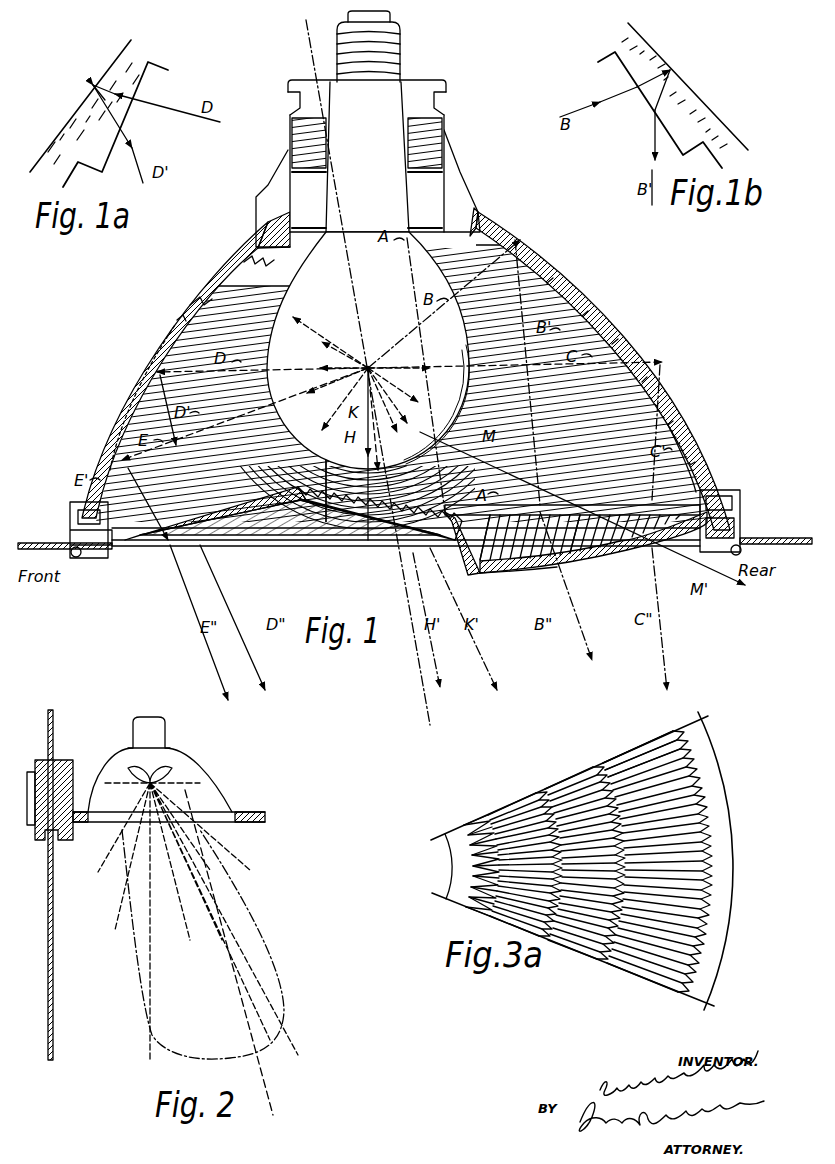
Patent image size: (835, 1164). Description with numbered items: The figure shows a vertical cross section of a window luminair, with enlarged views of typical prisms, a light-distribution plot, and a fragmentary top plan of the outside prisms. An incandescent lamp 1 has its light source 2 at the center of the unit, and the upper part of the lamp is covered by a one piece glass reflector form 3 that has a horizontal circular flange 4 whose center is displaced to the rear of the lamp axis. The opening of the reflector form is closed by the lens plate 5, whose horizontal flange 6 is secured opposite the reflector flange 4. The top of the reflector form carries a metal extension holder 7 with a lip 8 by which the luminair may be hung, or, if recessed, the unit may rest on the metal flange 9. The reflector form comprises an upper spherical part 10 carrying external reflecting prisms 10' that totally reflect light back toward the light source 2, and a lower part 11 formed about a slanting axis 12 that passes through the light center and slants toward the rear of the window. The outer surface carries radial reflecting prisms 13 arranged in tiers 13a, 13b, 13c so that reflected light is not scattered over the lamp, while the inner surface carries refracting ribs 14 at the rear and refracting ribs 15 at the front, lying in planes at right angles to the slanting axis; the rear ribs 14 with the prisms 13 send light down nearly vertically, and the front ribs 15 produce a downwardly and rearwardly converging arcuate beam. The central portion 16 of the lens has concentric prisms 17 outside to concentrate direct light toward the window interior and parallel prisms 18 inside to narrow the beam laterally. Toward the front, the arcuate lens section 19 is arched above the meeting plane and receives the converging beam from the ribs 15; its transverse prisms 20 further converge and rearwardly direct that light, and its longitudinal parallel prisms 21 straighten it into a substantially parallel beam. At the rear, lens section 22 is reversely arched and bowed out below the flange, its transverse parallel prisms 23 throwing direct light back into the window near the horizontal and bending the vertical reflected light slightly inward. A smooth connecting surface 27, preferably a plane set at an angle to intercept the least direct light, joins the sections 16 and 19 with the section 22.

In FIG. 1, the incandescent lamp 1 is at (320, 275).
In FIG. 1, the light source 2 is at (369, 366).
In FIG. 1, the glass reflector form 3 is at (578, 252).
In FIG. 2, the glass reflector form 3 is at (196, 770).
In FIG. 1, the horizontal circular flange 4 is at (722, 500).
In FIG. 3A, the horizontal circular flange 4 is at (728, 860).
In FIG. 1, the lens plate 5 is at (585, 558).
In FIG. 2, the lens plate 5 is at (140, 765).
In FIG. 1, the horizontal flange 6 is at (712, 562).
In FIG. 1, the metal extension holder 7 is at (448, 146).
In FIG. 1, the lip 8 is at (444, 88).
In FIG. 1, the metal flange 9 is at (38, 543).
In FIG. 1, the upper spherical part 10 is at (355, 189).
In FIG. 1, the external reflecting prisms 10' is at (231, 245).
In FIG. 3A, the external reflecting prisms 10' is at (480, 855).
In FIG. 1, the lower part 11 is at (145, 358).
In FIG. 1, the slanting axis 12 is at (309, 38).
In FIG. 1, the radial reflecting prisms 13 is at (632, 316).
In FIG. 3A, the radial reflecting prisms 13 is at (610, 777).
In FIG. 3A, the tier of radial reflecting prisms 13a is at (680, 982).
In FIG. 3A, the tier of radial reflecting prisms 13b is at (590, 950).
In FIG. 3A, the tier of radial reflecting prisms 13c is at (538, 810).
In FIG. 1, the refracting ribs 14 is at (680, 377).
In FIG. 1B, the refracting ribs 14 is at (632, 75).
In FIG. 1, the refracting ribs 15 is at (190, 306).
In FIG. 1A, the refracting ribs 15 is at (147, 79).
In FIG. 1, the central portion of lens 16 is at (352, 548).
In FIG. 1, the concentric prisms 17 is at (300, 548).
In FIG. 1, the parallel prisms 18 is at (280, 470).
In FIG. 1, the arcuate lens section 19 is at (158, 500).
In FIG. 1, the transverse prisms 20 is at (219, 474).
In FIG. 1, the longitudinal parallel prisms 21 is at (205, 548).
In FIG. 1, the lens section 22 is at (580, 562).
In FIG. 1, the transverse parallel prisms 23 is at (513, 572).
In FIG. 1, the smooth connecting surface 27 is at (460, 555).